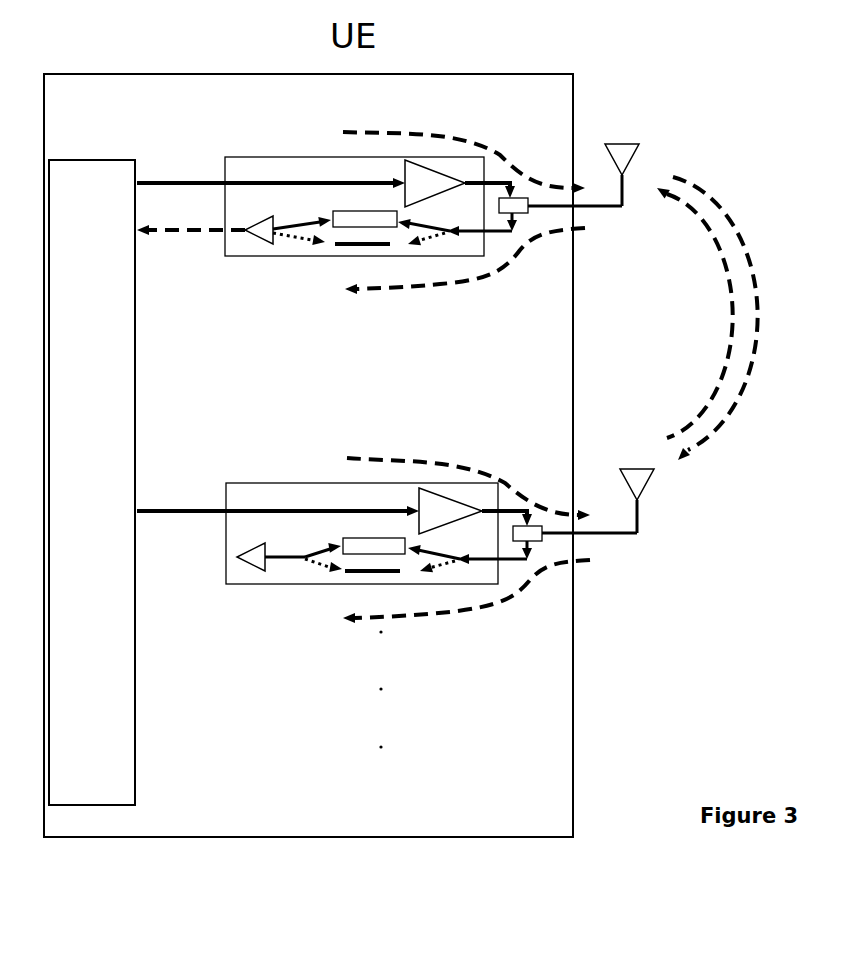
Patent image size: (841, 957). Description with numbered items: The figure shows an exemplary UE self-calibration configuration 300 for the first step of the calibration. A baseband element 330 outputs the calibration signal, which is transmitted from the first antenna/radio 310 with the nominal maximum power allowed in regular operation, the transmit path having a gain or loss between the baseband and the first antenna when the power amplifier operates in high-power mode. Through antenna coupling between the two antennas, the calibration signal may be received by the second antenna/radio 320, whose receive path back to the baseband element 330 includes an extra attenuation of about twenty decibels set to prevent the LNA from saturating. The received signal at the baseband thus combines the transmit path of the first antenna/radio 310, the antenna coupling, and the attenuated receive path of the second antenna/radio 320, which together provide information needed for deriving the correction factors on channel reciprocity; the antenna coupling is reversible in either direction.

The user equipment with multiple antenna/radio chains 300 is at (790, 140).
The first antenna/radio 310 is at (310, 148).
The second antenna/radio 320 is at (312, 468).
The baseband element 330 is at (122, 152).